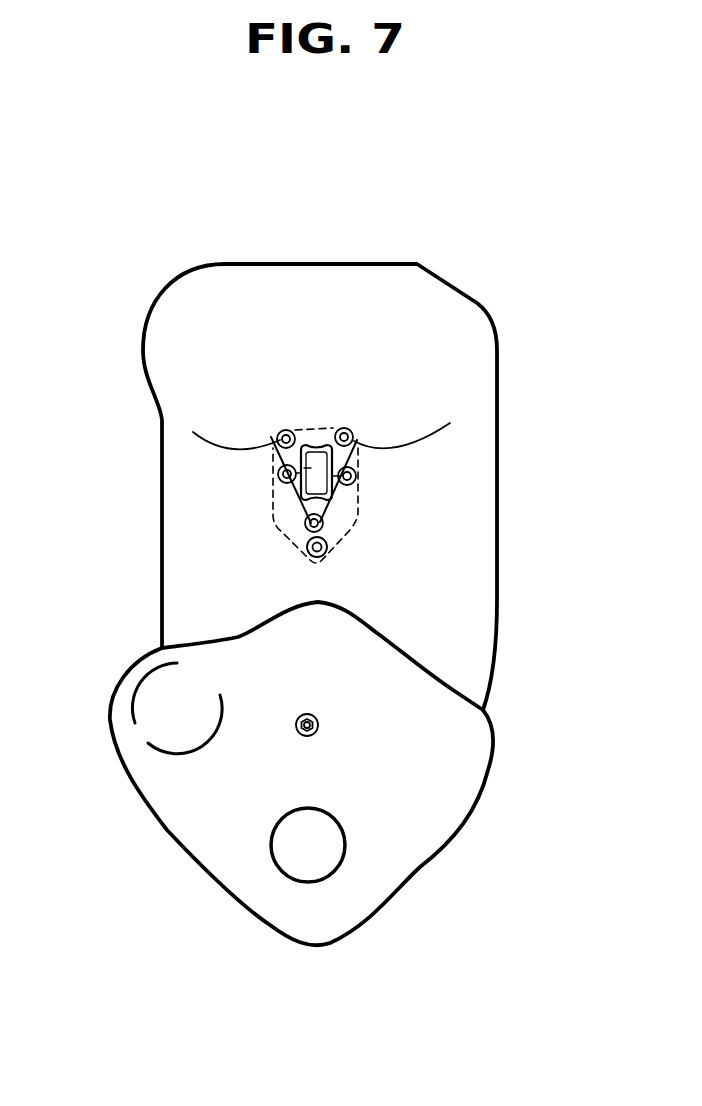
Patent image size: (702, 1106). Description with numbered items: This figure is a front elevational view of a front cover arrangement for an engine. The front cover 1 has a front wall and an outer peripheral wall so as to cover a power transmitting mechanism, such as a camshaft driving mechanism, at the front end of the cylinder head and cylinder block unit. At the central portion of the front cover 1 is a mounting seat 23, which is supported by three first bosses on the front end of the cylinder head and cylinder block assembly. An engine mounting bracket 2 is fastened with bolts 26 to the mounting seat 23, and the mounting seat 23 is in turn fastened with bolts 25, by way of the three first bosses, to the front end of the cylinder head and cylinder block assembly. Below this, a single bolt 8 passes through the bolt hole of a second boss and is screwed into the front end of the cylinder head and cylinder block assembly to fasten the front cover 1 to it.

The front cover 1 is at (477, 303).
The engine mounting bracket 2 is at (271, 437).
The bolt 8 is at (320, 728).
The mounting seat 23 is at (273, 520).
The bolts 25 is at (278, 436).
The bolts 26 is at (278, 472).